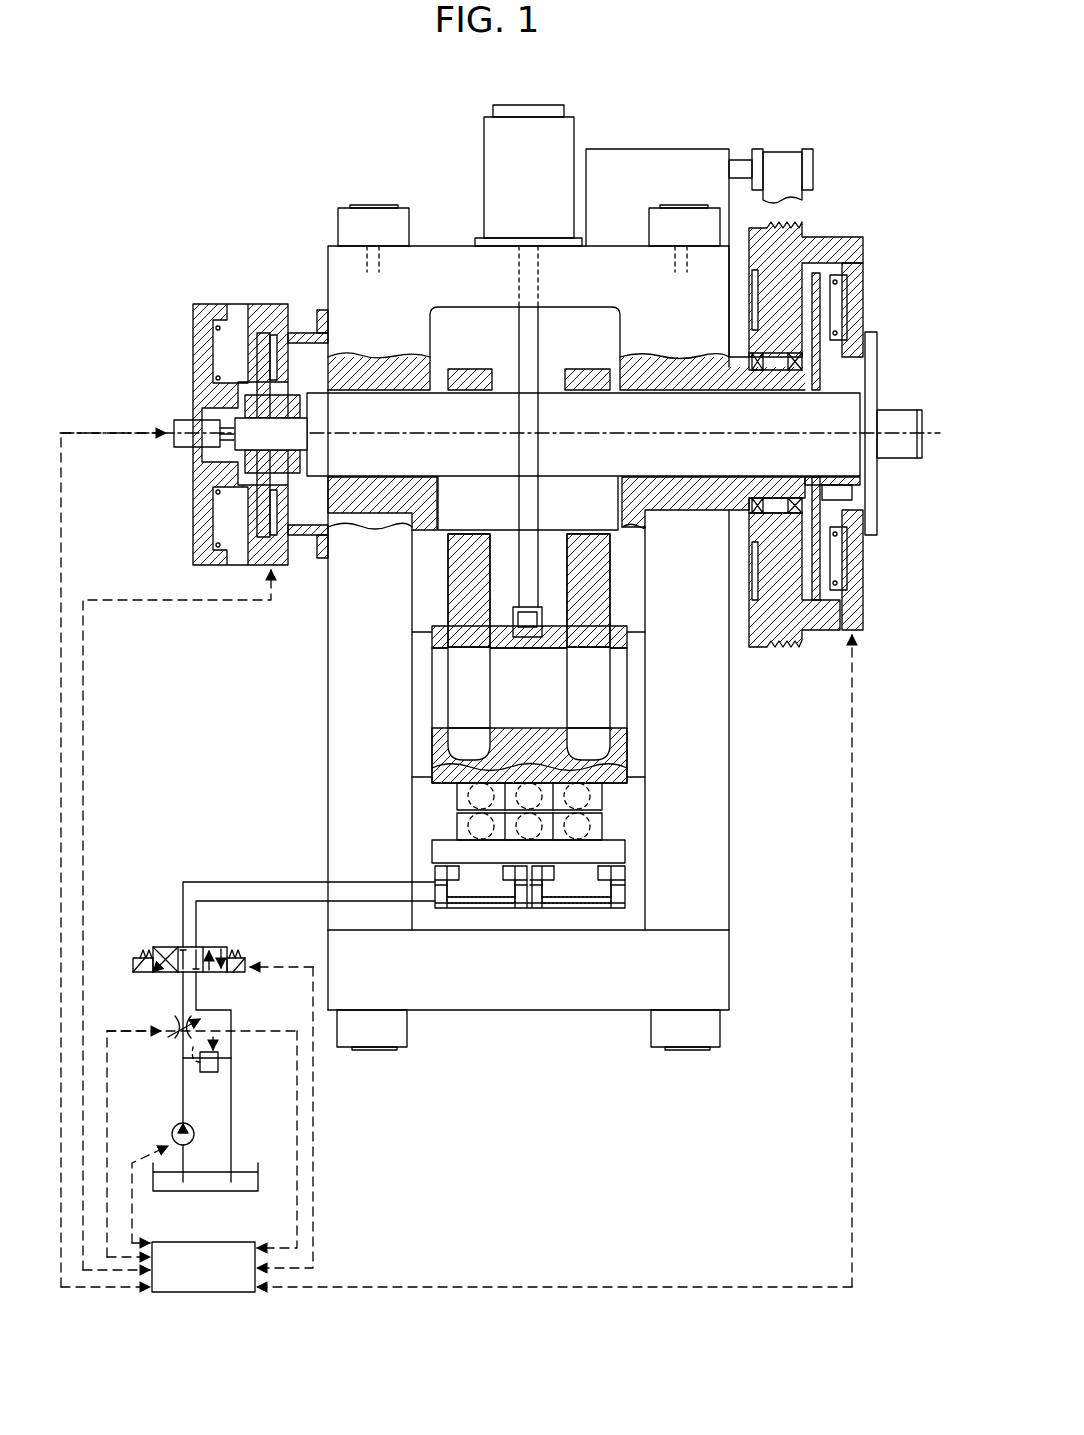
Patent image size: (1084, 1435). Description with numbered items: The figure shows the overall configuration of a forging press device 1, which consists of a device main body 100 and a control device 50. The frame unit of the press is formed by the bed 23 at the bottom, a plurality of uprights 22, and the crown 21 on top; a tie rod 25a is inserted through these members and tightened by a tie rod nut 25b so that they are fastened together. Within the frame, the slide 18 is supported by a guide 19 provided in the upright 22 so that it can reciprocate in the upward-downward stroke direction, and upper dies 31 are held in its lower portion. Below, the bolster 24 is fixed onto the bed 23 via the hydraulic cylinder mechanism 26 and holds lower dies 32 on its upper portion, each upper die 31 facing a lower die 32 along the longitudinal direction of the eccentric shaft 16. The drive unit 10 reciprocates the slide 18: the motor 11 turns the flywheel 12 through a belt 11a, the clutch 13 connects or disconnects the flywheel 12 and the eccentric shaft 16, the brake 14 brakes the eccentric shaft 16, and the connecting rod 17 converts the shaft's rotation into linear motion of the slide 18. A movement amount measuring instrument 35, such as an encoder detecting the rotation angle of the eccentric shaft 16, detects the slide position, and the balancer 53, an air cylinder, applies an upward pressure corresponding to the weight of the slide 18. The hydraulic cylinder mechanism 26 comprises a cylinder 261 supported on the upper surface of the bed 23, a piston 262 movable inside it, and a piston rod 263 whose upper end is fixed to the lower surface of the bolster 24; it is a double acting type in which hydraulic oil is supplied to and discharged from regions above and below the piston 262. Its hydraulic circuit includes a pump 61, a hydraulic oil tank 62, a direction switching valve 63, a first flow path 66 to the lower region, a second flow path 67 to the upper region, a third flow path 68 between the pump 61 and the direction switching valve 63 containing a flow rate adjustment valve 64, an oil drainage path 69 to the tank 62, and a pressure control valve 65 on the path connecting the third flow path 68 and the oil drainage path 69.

The press device 1 is at (190, 117).
The device main body 100 is at (373, 113).
The drive unit 10 is at (888, 218).
The motor 11 is at (678, 148).
The belt 11a is at (783, 150).
The flywheel 12 is at (793, 250).
The clutch 13 is at (863, 298).
The brake 14 is at (270, 307).
The eccentric shaft 16 is at (503, 388).
The connecting rod 17 is at (447, 590).
The slide 18 is at (438, 770).
The guide 19 is at (418, 690).
The crown 21 is at (450, 253).
The uprights 22 is at (345, 803).
The bed 23 is at (705, 950).
The bolster 24 is at (627, 850).
The tie rod 25a is at (380, 260).
The tie rod nut 25b is at (343, 207).
The hydraulic cylinder mechanism 26 is at (380, 1110).
The cylinder 261 is at (441, 905).
The piston 262 is at (464, 893).
The piston rod 263 is at (480, 873).
The upper dies 31 is at (620, 793).
The lower dies 32 is at (620, 825).
The movement amount measuring instrument 35 is at (172, 438).
The control device 50 is at (207, 1293).
The balancer 53 is at (488, 116).
The pump 61 is at (172, 1133).
The hydraulic oil tank 62 is at (212, 1192).
The direction switching valve 63 is at (170, 948).
The flow rate adjustment valve 64 is at (170, 1027).
The pressure control valve 65 is at (210, 1073).
The first flow path 66 is at (262, 901).
The second flow path 67 is at (268, 878).
The third flow path 68 is at (182, 1092).
The oil drainage path 69 is at (232, 1140).